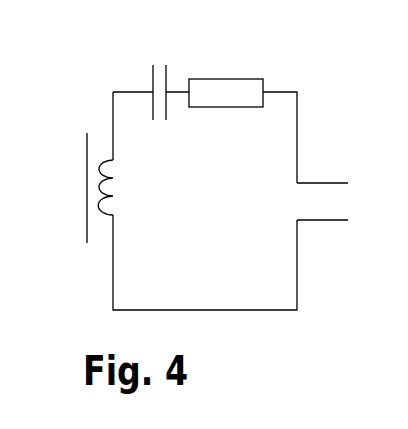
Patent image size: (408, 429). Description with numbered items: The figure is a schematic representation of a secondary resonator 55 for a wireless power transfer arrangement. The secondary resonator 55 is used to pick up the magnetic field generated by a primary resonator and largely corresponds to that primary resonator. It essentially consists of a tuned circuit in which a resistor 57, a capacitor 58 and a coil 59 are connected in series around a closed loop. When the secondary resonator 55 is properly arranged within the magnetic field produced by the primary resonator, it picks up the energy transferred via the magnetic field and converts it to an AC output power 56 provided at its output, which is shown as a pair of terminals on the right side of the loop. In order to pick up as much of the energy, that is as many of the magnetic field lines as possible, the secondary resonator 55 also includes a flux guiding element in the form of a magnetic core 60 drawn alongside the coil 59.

The secondary resonator 55 is at (309, 77).
The AC output power 56 is at (330, 201).
The resistor 57 is at (217, 78).
The capacitor 58 is at (163, 60).
The coil 59 is at (122, 188).
The magnetic core 60 is at (87, 125).